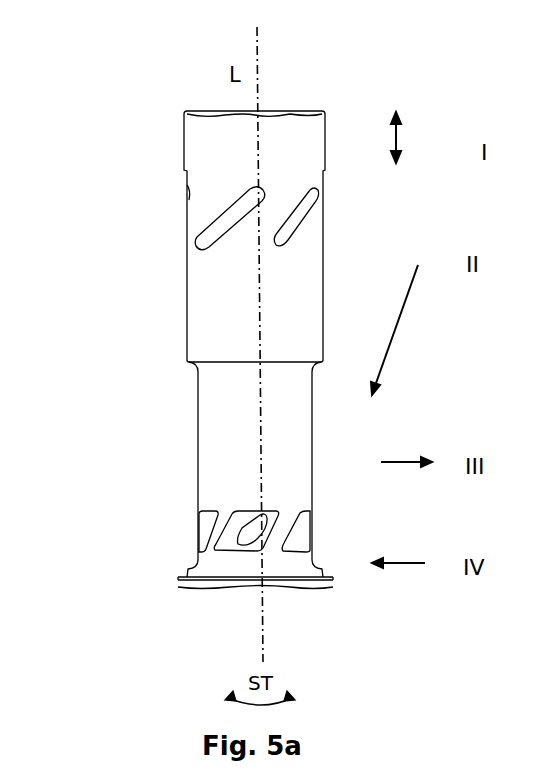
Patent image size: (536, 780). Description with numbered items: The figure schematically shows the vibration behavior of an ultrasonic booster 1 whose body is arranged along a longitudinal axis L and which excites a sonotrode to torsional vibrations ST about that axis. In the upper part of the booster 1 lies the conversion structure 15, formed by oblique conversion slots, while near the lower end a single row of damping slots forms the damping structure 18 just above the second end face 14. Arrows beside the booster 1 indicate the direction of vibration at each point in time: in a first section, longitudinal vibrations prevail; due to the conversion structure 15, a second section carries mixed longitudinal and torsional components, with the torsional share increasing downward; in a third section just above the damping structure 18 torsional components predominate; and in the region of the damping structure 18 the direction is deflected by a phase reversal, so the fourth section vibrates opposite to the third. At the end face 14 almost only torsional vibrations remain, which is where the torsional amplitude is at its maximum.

The ultrasonic booster 1 is at (190, 385).
The conversion structure 15 is at (225, 200).
The damping structure 18 is at (215, 520).
The second end face 14 is at (178, 563).